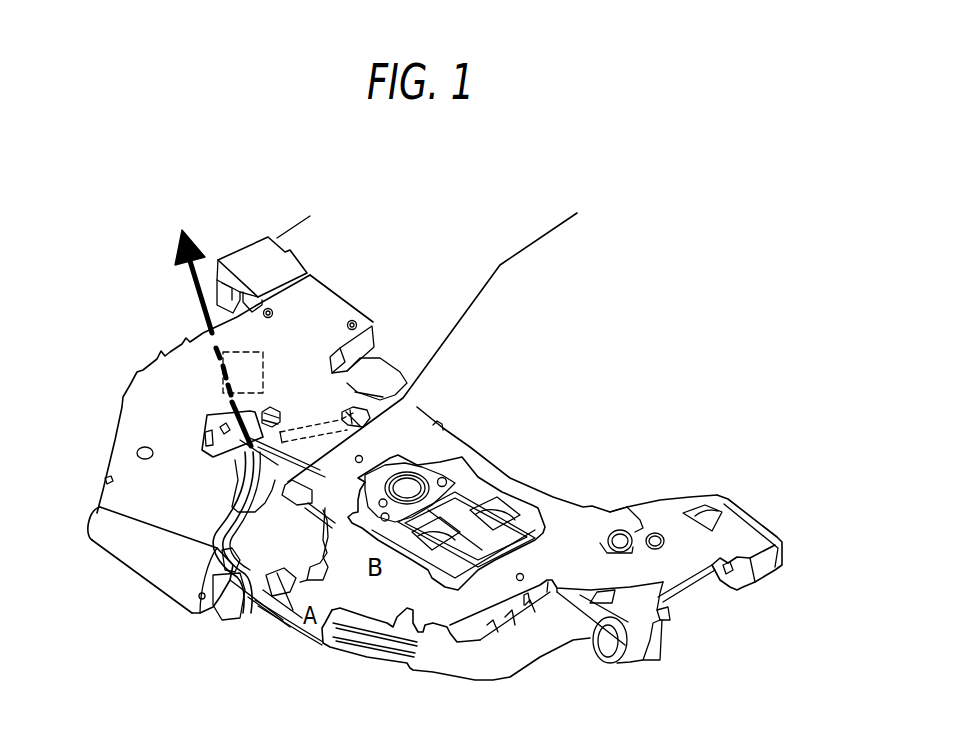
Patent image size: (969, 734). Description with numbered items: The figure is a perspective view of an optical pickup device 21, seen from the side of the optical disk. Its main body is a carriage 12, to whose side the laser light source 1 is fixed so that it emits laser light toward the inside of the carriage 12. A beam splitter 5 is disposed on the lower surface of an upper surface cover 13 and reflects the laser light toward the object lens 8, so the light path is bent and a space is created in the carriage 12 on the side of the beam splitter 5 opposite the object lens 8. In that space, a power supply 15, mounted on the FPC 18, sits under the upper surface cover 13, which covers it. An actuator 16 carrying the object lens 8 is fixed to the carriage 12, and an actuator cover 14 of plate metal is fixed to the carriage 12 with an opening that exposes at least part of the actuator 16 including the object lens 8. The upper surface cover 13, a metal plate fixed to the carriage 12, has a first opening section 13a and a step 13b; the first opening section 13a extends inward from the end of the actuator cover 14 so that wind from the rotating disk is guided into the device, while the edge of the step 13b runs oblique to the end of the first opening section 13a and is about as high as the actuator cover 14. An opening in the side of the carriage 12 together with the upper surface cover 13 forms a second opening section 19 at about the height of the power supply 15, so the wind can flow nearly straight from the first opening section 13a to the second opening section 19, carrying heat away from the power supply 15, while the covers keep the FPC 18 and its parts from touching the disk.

The laser light source 1 is at (233, 590).
The beam splitter 5 is at (307, 432).
The object lens 8 is at (458, 458).
The carriage 12 is at (740, 512).
The upper surface cover 13 is at (400, 382).
The first opening section 13a is at (208, 420).
The step 13b is at (222, 550).
The actuator cover 14 is at (580, 523).
The power supply 15 is at (253, 352).
The actuator 16 is at (503, 515).
The FPC 18 is at (482, 262).
The second opening section 19 is at (203, 333).
The optical pickup device 21 is at (715, 250).